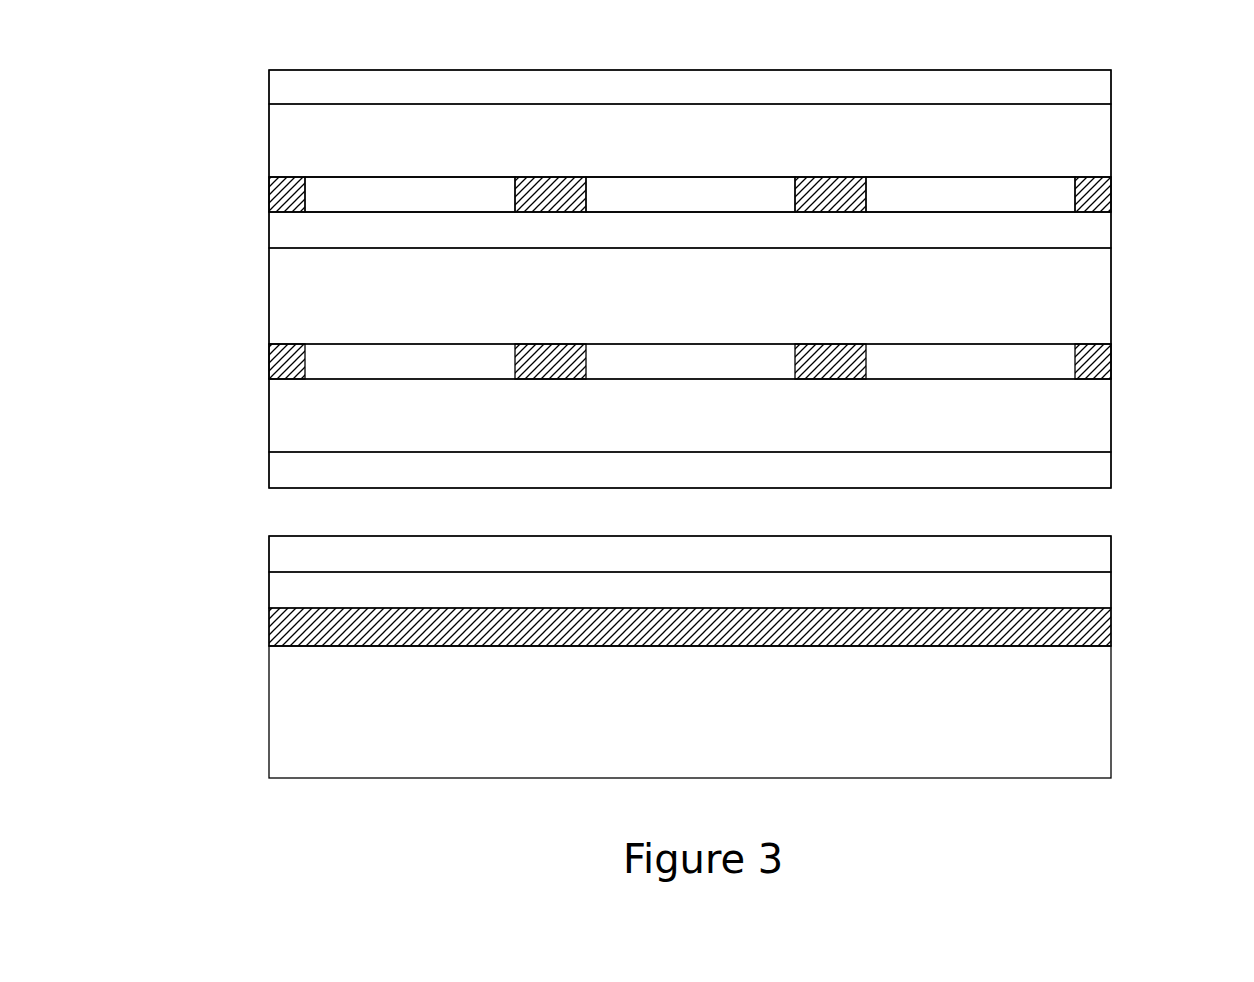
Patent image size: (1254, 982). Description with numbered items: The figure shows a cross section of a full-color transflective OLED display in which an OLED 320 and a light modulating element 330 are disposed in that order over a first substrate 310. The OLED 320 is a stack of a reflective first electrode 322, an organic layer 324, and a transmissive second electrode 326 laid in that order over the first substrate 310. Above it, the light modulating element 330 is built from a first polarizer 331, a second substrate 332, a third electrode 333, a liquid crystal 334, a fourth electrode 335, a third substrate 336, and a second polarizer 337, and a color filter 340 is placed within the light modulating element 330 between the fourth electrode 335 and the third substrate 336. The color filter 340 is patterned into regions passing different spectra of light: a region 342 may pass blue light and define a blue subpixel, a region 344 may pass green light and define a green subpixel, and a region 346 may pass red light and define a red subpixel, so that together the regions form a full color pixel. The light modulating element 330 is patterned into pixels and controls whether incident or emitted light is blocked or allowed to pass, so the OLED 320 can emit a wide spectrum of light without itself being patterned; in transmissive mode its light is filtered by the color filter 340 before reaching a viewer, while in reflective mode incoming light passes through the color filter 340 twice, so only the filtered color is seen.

The first substrate 310 is at (269, 709).
The OLED 320 is at (269, 547).
The reflective first electrode 322 is at (1111, 627).
The organic layer 324 is at (1111, 590).
The transmissive second electrode 326 is at (1111, 553).
The light modulating element 330 is at (269, 83).
The first polarizer 331 is at (1111, 471).
The second substrate 332 is at (1111, 416).
The third electrode 333 is at (970, 381).
The liquid crystal 334 is at (1111, 295).
The fourth electrode 335 is at (1111, 232).
The third substrate 336 is at (1111, 140).
The second polarizer 337 is at (1111, 88).
The color filter 340 is at (1111, 195).
The region 342 is at (410, 175).
The region 344 is at (690, 175).
The region 346 is at (972, 175).